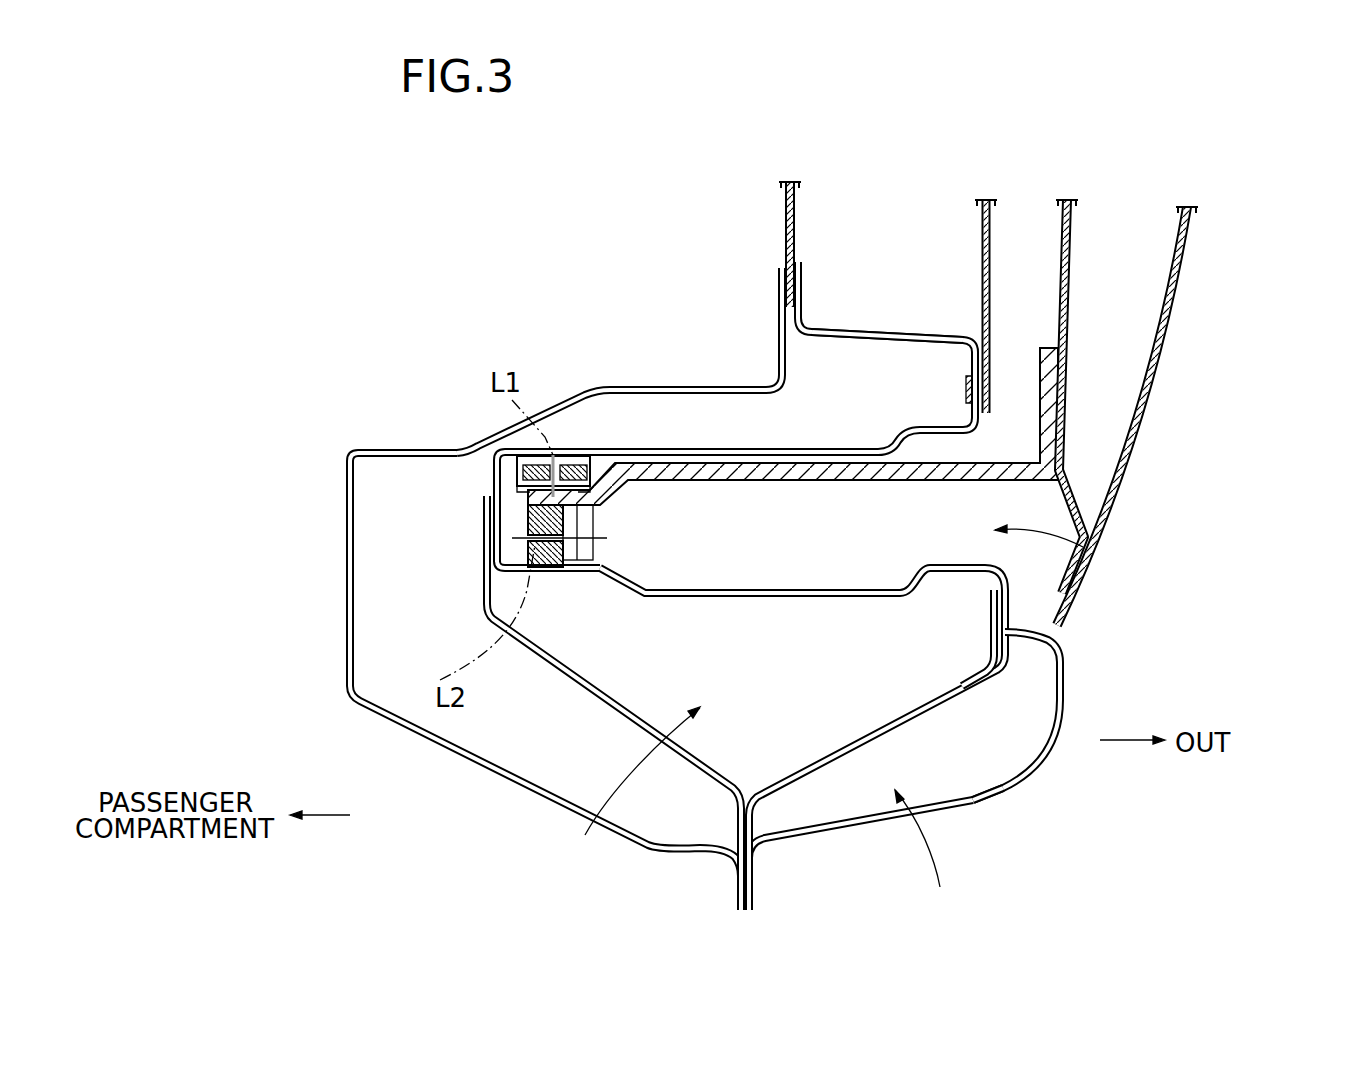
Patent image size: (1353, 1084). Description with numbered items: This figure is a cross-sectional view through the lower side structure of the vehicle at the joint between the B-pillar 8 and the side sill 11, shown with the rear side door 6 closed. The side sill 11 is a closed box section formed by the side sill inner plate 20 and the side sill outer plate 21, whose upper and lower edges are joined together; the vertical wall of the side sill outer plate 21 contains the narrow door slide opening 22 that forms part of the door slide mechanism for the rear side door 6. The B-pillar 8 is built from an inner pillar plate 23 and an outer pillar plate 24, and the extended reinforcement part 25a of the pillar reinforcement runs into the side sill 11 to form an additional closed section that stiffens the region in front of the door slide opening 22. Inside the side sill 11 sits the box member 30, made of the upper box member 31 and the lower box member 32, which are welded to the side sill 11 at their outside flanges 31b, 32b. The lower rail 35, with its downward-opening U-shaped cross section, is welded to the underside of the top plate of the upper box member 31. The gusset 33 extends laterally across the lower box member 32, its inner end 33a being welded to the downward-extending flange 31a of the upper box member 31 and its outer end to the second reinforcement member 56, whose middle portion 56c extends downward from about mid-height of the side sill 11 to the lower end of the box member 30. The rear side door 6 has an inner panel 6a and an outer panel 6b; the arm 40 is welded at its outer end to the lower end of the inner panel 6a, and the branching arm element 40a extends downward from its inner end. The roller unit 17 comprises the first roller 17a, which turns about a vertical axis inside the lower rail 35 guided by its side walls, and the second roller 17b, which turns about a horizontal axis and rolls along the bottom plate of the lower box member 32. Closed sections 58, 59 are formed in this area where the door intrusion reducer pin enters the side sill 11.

The rear side door 6 is at (1197, 412).
The inner panel 6a is at (1077, 242).
The outer panel 6b is at (1177, 323).
The B-pillar 8 is at (888, 229).
The inner pillar plate 23 is at (798, 217).
The outer pillar plate 24 is at (982, 236).
The extended reinforcement part 25a is at (893, 333).
The side sill 11 is at (661, 706).
The side sill inner plate 20 is at (648, 847).
The side sill outer plate 21 is at (887, 842).
The roller unit 17 is at (395, 522).
The first roller 17a is at (517, 490).
The second roller 17b is at (528, 540).
The box member 30 is at (635, 586).
The upper box member 31 is at (620, 415).
The downward-extending flange 31a is at (483, 470).
The flange 31b is at (967, 392).
The lower box member 32 is at (802, 739).
The flange 32b is at (990, 613).
The gusset 33 is at (498, 703).
The inner end 33a is at (480, 587).
The lower rail 35 is at (497, 450).
The arm 40 is at (785, 455).
The branching arm element 40a is at (607, 540).
The door slide opening 22 is at (1085, 540).
The second reinforcement member 56 is at (1014, 762).
The middle portion 56c is at (988, 794).
The second closed section 58 is at (585, 835).
The third closed section 59 is at (926, 859).